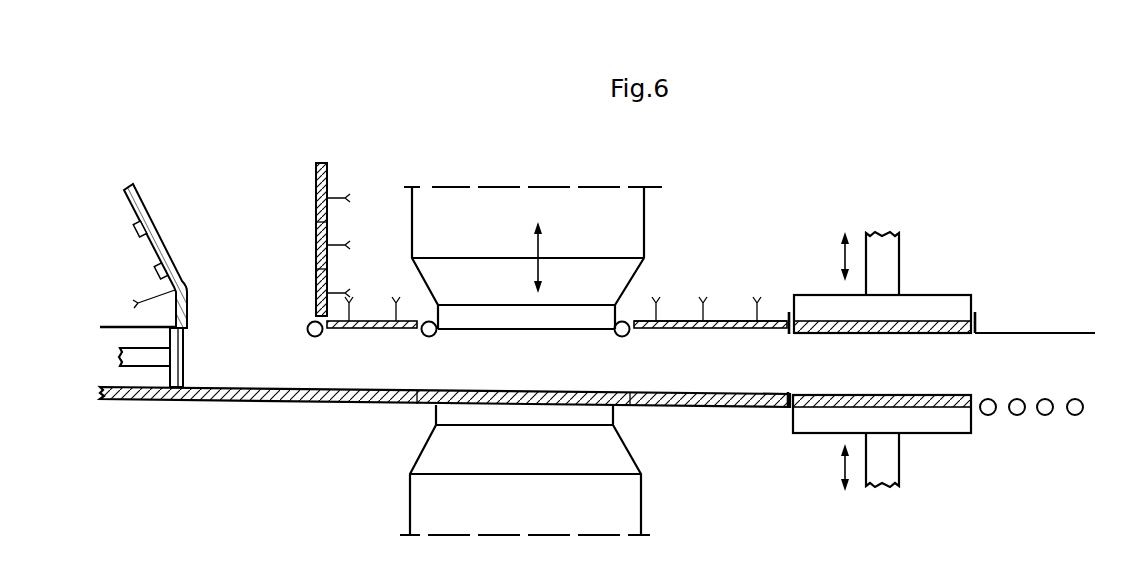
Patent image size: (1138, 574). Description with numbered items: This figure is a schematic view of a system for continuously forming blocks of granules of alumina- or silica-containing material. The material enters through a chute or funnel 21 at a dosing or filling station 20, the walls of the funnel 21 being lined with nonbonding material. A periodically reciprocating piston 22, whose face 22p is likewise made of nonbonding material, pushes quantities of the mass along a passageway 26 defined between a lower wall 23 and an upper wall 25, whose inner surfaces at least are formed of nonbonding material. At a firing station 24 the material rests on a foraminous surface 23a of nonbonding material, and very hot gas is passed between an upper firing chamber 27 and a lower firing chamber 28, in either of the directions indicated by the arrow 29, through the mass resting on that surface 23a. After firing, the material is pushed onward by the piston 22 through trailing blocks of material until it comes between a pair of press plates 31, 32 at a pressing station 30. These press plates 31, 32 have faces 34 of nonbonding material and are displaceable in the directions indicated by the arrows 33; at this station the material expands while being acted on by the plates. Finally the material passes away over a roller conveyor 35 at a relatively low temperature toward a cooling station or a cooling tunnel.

The dosing or filling station 20 is at (290, 175).
The chute or funnel 21 is at (327, 211).
The periodically reciprocating piston 22 is at (143, 360).
The nonbonding face of piston 22p is at (184, 357).
The lower wall 23 is at (445, 420).
The foraminous surface 23a is at (615, 407).
The firing station 24 is at (548, 242).
The upper wall 25 is at (383, 320).
The passageway 26 is at (673, 320).
The upper firing chamber 27 is at (640, 220).
The lower firing chamber 28 is at (628, 513).
The arrow 29 is at (540, 247).
The pressing station 30 is at (944, 288).
The press plate 31 is at (902, 294).
The press plate 32 is at (930, 427).
The arrows 33 is at (843, 258).
The faces of nonbonding material 34 is at (939, 327).
The roller conveyor 35 is at (1046, 414).